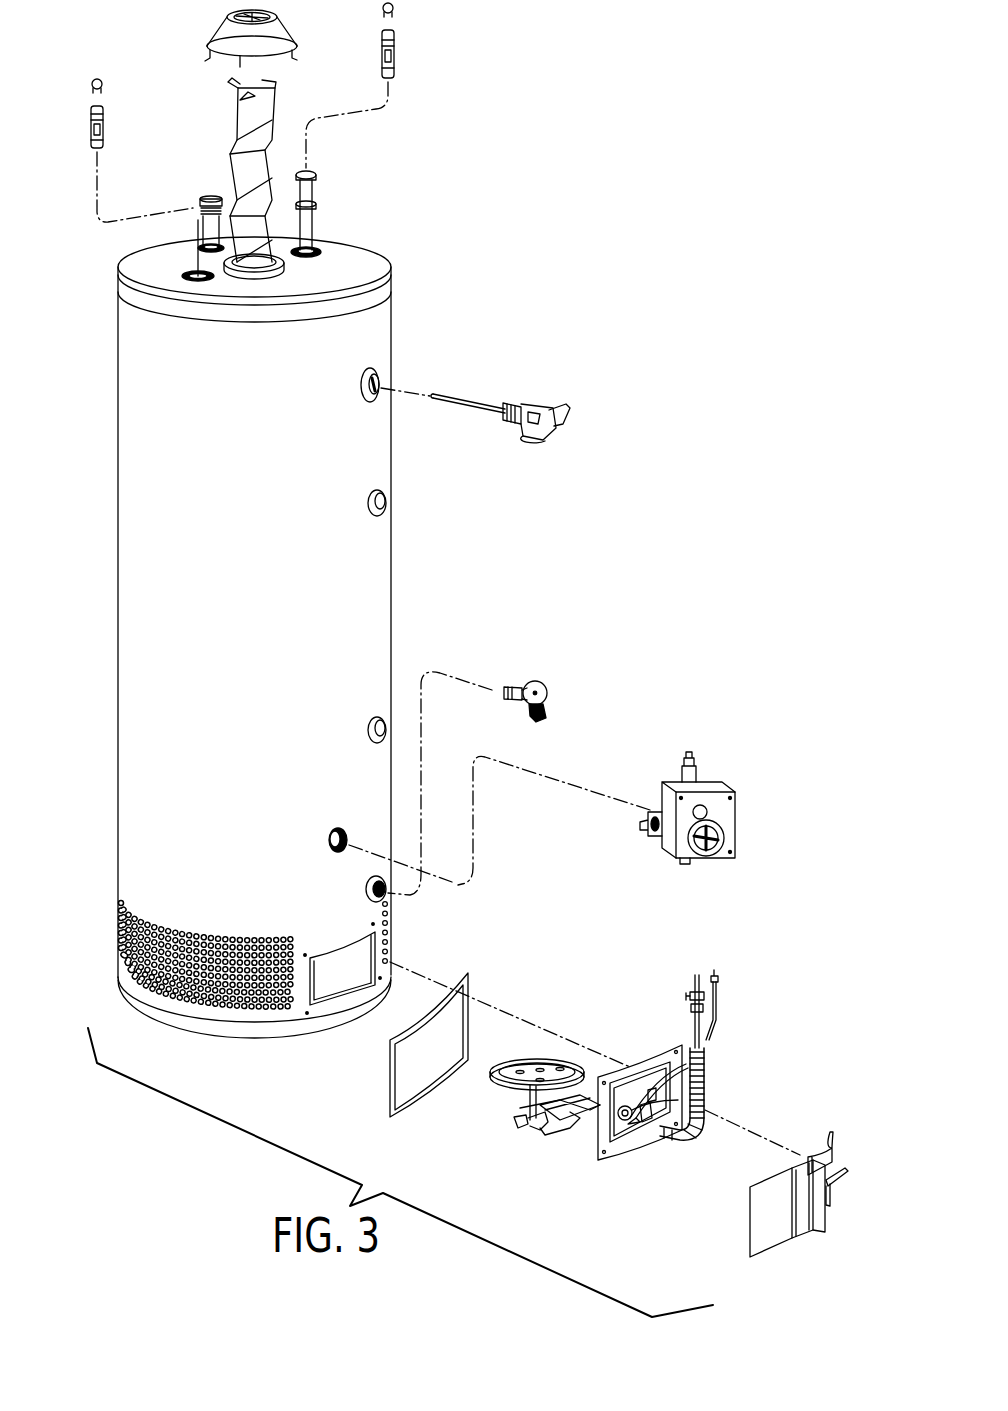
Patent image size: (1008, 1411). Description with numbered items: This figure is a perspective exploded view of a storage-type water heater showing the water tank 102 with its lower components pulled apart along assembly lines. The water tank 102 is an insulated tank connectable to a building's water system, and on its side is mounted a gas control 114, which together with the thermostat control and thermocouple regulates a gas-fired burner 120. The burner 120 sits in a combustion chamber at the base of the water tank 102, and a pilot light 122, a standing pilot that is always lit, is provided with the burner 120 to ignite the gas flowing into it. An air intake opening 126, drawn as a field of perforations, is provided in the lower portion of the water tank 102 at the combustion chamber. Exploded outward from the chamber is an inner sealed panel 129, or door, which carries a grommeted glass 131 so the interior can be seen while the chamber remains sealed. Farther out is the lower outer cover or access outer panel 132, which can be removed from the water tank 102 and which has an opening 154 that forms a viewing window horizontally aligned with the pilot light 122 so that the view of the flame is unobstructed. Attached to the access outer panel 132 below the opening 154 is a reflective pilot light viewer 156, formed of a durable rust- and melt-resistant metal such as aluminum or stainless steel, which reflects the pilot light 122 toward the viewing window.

The water tank 102 is at (148, 458).
The gas control 114 is at (714, 797).
The burner 120 is at (540, 1075).
The pilot light 122 is at (528, 1122).
The air intake opening 126 is at (140, 945).
The inner sealed panel 129 is at (651, 1168).
The grommeted glass 131 is at (682, 1086).
The access outer panel 132 is at (768, 1220).
The opening 154 is at (832, 1163).
The reflective pilot light viewer 156 is at (844, 1178).